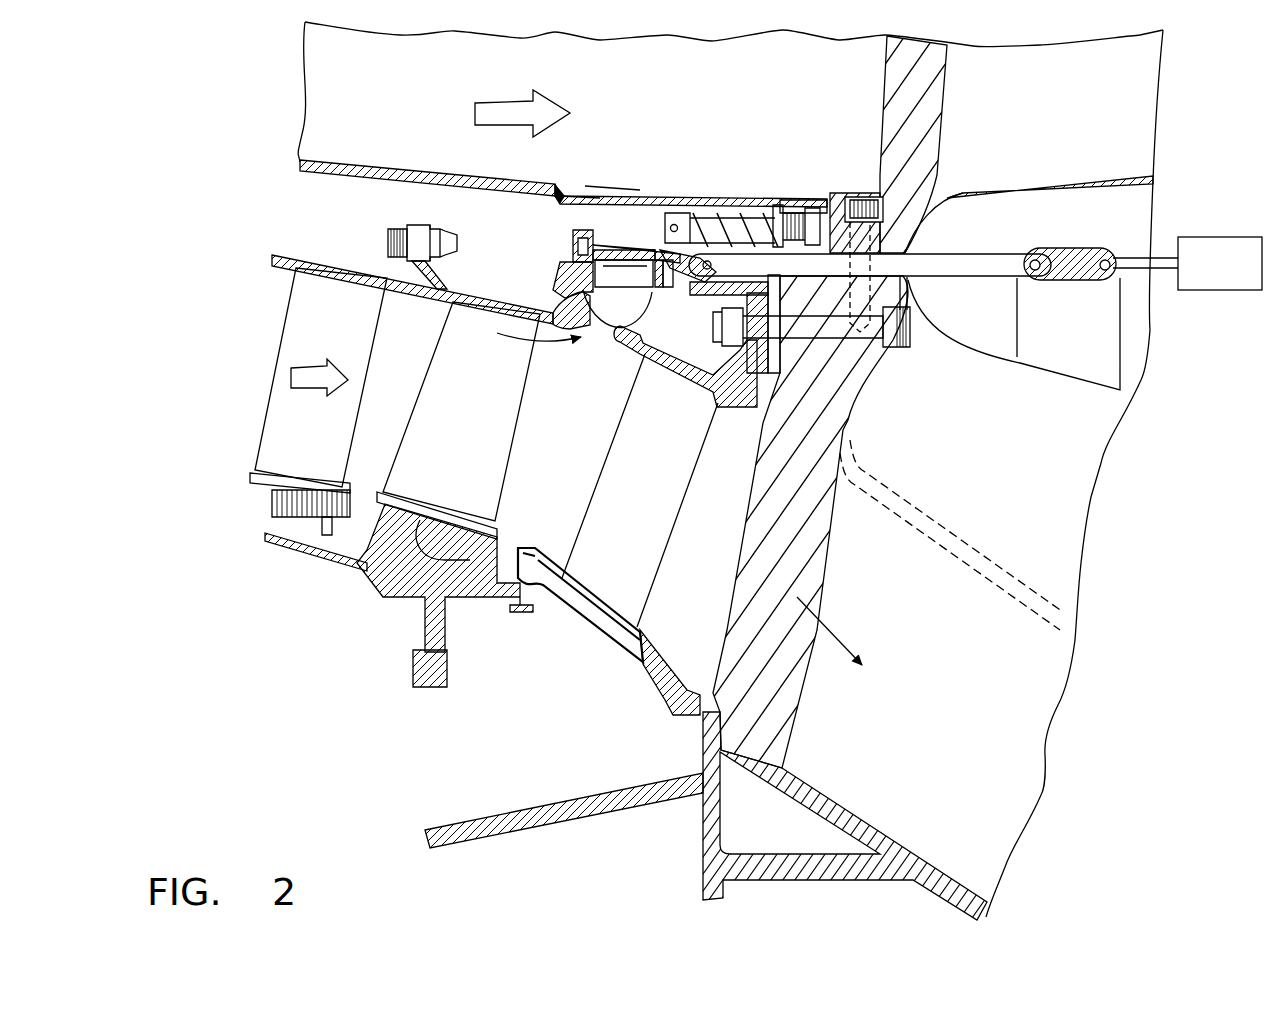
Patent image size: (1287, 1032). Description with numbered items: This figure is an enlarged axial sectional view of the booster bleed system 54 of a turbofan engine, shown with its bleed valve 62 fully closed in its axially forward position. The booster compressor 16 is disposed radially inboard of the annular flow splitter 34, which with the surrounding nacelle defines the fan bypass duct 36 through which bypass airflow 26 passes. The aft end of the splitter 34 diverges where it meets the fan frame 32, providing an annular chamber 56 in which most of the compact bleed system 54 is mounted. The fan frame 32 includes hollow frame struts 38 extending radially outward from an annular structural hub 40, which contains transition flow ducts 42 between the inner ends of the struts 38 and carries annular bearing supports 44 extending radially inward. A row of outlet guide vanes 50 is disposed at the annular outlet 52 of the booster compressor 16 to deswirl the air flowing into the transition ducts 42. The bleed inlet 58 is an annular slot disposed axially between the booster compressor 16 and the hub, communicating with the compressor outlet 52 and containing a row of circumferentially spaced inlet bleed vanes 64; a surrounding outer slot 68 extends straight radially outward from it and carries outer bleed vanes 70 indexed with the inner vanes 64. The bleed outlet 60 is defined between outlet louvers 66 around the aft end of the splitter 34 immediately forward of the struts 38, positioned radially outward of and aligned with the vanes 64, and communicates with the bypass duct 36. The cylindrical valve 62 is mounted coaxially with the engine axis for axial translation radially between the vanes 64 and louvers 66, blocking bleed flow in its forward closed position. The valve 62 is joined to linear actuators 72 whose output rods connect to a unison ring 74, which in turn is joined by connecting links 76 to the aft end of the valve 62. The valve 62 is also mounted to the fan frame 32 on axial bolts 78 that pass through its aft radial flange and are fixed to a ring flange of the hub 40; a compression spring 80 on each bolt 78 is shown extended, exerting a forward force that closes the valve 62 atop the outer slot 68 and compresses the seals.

The booster compressor 16 is at (468, 428).
The airflow 26 is at (503, 100).
The fan frame 32 is at (1160, 113).
The flow splitter 34 is at (332, 160).
The fan bypass duct 36 is at (731, 76).
The frame struts 38 is at (1041, 105).
The structural hub 40 is at (850, 421).
The transition flow ducts 42 is at (927, 537).
The bearing supports 44 is at (560, 820).
The outlet guide vanes 50 is at (671, 465).
The annular outlet 52 is at (630, 505).
The booster bleed system 54 is at (750, 142).
The annular chamber 56 is at (539, 221).
The bleed inlet 58 is at (598, 330).
The bleed outlet 60 is at (577, 184).
The bleed valve 62 is at (628, 248).
The inlet bleed vanes 64 is at (636, 313).
The outlet louvers 66 is at (610, 187).
The outer slot 68 is at (562, 282).
The outer bleed vanes 70 is at (612, 273).
The linear actuators 72 is at (1236, 277).
The unison ring 74 is at (1065, 282).
The connecting links 76 is at (960, 278).
The axial bolts 78 is at (740, 210).
The compression spring 80 is at (700, 213).